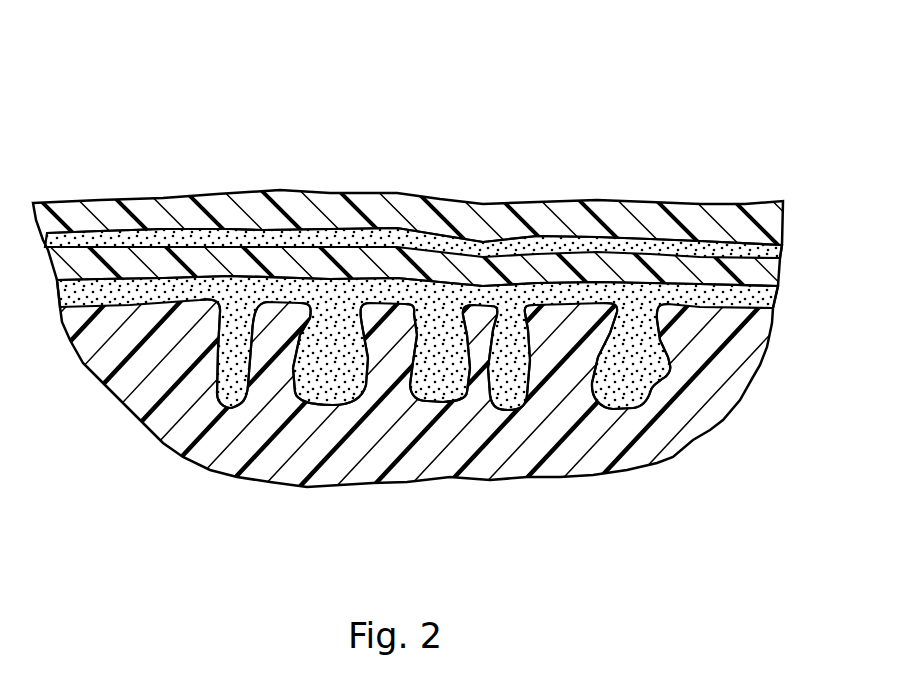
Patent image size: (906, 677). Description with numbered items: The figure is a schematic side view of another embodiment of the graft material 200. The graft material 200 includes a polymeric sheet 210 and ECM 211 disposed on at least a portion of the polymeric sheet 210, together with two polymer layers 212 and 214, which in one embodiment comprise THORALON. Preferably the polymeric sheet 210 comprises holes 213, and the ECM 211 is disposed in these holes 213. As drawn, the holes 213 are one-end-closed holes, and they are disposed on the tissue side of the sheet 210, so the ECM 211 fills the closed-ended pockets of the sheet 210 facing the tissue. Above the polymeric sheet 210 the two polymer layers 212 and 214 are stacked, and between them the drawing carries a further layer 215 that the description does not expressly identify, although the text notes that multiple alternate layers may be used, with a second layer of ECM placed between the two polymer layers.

The graft material 200 is at (222, 86).
The polymeric sheet 210 is at (543, 437).
The ECM 211 is at (477, 290).
The polymer layer 212 is at (317, 267).
The holes 213 is at (240, 466).
The polymer layer 214 is at (722, 222).
The intermediate conductive layer 215 is at (627, 243).